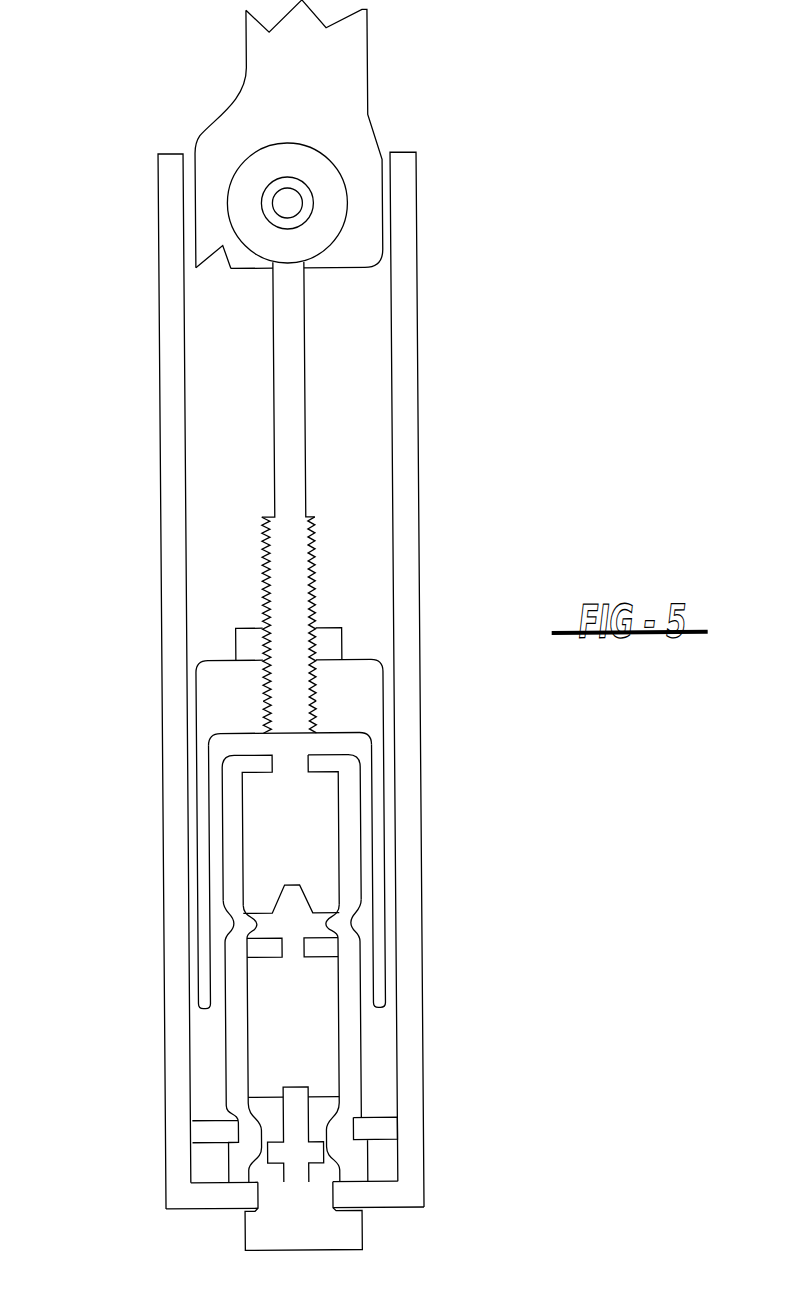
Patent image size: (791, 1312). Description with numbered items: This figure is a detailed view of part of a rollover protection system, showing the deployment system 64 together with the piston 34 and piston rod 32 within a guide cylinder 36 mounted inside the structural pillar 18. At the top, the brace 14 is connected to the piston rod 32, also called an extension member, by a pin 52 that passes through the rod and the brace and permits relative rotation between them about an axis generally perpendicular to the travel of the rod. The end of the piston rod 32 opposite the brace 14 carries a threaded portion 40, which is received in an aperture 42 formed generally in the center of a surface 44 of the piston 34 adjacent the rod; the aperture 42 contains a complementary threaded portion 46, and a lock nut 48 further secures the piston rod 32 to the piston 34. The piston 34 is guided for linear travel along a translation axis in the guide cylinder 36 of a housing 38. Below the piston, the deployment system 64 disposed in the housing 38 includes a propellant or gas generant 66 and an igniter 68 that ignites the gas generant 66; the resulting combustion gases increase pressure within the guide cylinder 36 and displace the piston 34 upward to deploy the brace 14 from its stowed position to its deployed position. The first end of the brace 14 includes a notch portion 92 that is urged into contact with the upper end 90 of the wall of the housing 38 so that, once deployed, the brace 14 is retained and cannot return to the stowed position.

The brace 14 is at (286, 81).
The pin 52 is at (287, 203).
The upper end of the housing 90 is at (173, 153).
The notch portion 92 is at (213, 262).
The threaded portion 40 is at (365, 248).
The guide cylinder 36 is at (388, 384).
The piston rod 32 is at (288, 462).
The lock nut 48 is at (329, 638).
The surface 44 is at (209, 660).
The housing 38 is at (418, 623).
The aperture 42 is at (258, 717).
The complementary threaded portion 46 is at (311, 693).
The piston 34 is at (361, 722).
The pillar 18 is at (142, 833).
The igniter 68 is at (290, 1097).
The gas generant 66 is at (270, 978).
The deployment system 64 is at (370, 1035).